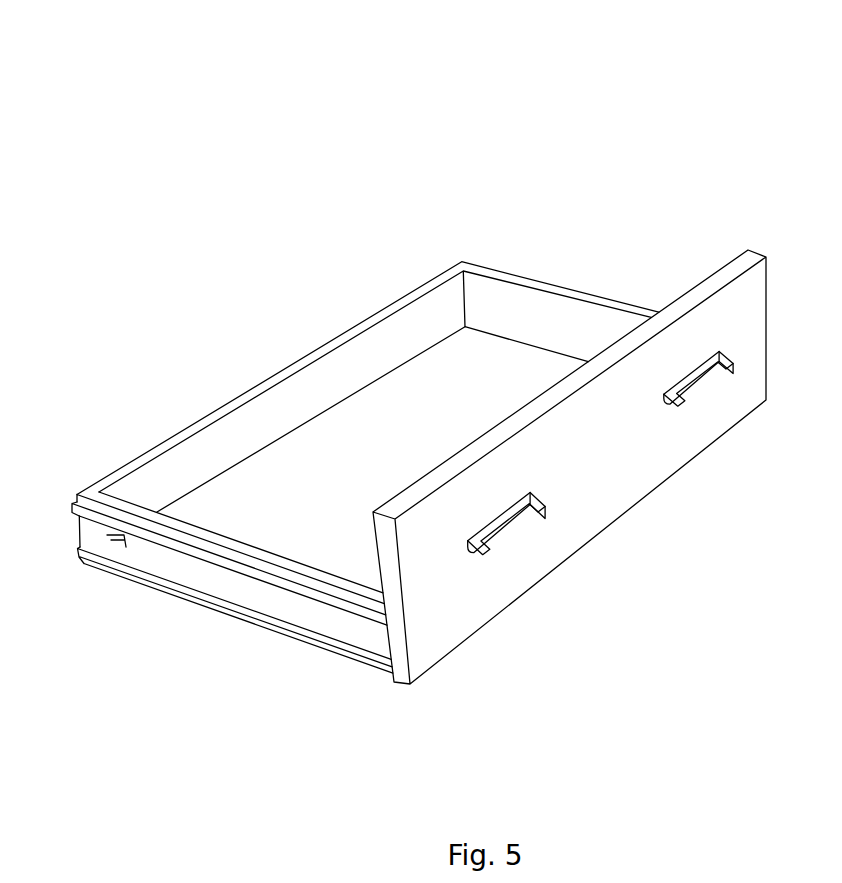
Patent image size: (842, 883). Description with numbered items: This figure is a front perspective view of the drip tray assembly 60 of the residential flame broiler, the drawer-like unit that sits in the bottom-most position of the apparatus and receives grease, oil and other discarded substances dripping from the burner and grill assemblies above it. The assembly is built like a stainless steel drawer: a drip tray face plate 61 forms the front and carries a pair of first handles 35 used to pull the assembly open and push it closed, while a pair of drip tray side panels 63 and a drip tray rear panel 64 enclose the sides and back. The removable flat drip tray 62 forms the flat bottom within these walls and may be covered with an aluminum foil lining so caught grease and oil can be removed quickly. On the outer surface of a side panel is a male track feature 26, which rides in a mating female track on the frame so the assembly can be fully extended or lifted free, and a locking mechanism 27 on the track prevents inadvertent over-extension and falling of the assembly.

The drip tray assembly 60 is at (721, 131).
The drip tray face plate 61 is at (458, 620).
The removable flat drip tray 62 is at (434, 388).
The drip tray side panels 63 is at (586, 296).
The drip tray rear panel 64 is at (297, 361).
The male track feature 26 is at (92, 532).
The locking mechanism 27 is at (115, 540).
The first handles 35 is at (711, 391).